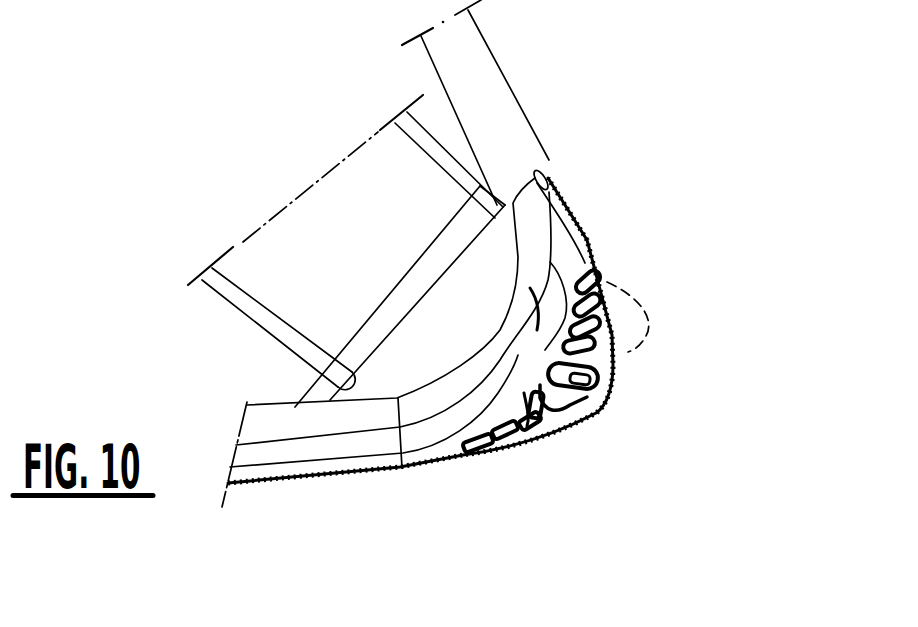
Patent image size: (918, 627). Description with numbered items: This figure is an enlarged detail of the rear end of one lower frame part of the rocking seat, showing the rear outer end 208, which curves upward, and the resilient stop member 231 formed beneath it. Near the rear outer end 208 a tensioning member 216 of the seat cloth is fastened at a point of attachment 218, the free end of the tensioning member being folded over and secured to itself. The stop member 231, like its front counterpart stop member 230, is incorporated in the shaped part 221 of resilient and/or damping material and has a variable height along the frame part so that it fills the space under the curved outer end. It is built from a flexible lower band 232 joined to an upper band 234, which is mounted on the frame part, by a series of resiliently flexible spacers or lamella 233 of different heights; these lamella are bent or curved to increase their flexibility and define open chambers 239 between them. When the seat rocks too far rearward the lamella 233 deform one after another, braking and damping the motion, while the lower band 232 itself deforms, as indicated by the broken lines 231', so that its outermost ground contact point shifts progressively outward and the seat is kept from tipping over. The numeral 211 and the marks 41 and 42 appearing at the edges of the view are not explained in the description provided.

The stop member 230 is at (160, 8).
The probe 211 is at (480, 72).
The tensioning member 216 is at (281, 273).
The point of attachment 218 is at (315, 387).
The rear outer end 208 is at (449, 396).
The lower band 232 is at (528, 443).
The stop member 231 is at (644, 338).
The deformed lower band (broken lines) 231' is at (703, 302).
The spacers or lamella 233 is at (600, 357).
The upper band 234 is at (549, 262).
The chambers 239 is at (535, 402).
The shaped part 221 is at (263, 508).
The dimension 41 is at (384, 619).
The dimension 42 is at (464, 619).